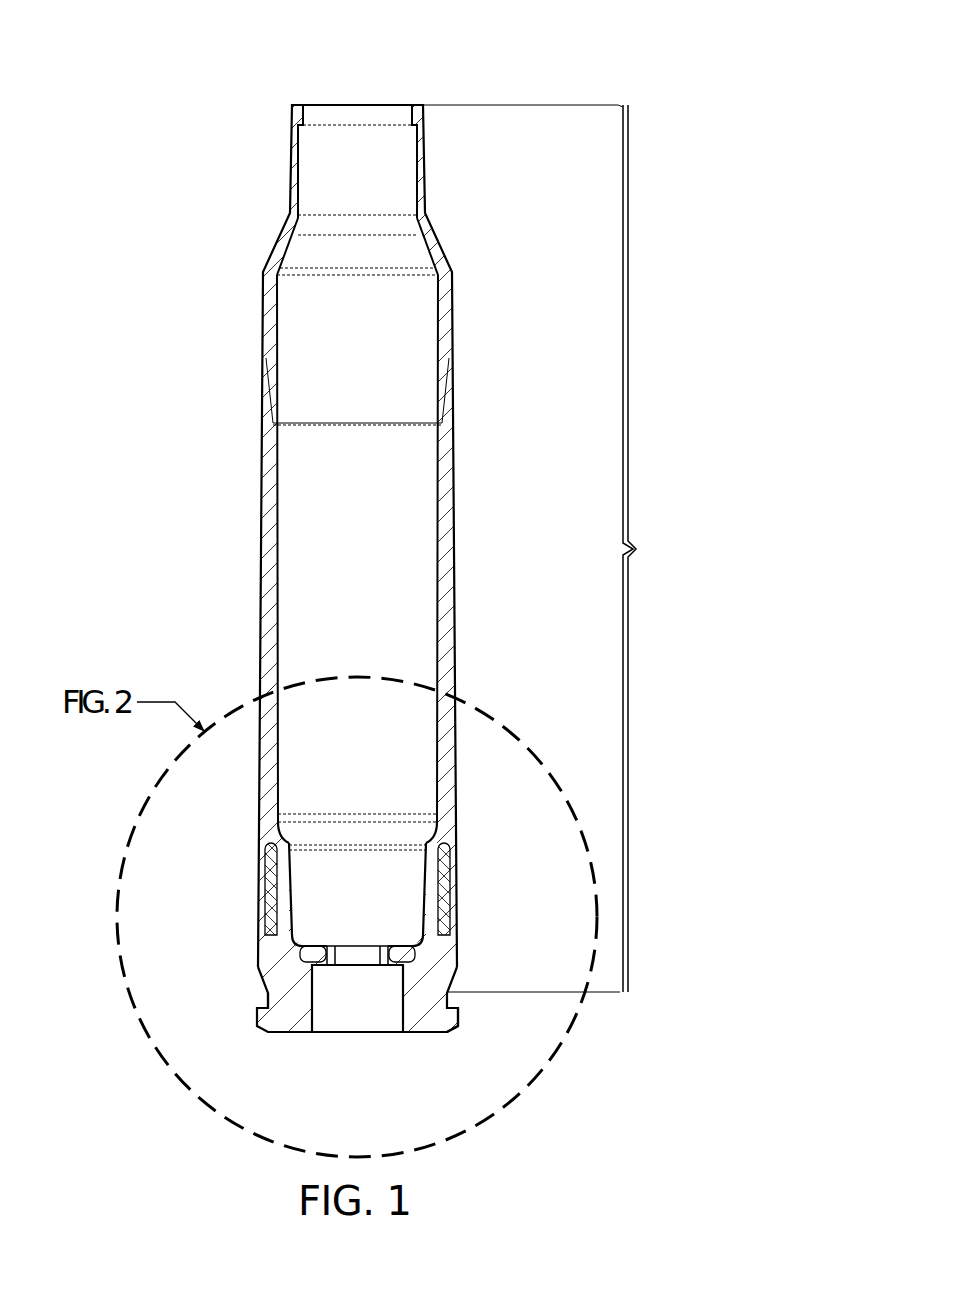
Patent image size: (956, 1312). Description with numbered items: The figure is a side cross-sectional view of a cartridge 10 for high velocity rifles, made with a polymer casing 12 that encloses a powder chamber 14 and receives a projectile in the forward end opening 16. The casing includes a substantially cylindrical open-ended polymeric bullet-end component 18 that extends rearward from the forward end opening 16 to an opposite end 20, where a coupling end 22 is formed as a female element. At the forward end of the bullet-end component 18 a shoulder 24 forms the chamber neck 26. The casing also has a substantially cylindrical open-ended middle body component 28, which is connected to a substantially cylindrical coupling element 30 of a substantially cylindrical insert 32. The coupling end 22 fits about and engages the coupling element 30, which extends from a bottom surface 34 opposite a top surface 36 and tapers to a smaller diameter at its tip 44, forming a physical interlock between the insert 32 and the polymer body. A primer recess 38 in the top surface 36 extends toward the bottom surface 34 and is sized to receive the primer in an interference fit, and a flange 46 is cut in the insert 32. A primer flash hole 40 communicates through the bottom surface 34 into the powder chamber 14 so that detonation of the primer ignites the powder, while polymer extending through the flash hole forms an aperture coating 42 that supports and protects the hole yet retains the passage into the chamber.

The cartridge 10 is at (241, 54).
The polymer casing 12 is at (546, 548).
The powder chamber 14 is at (372, 575).
The forward end opening 16 is at (370, 87).
The bullet-end component 18 is at (260, 310).
The opposite end 20 is at (340, 862).
The coupling end 22 is at (452, 872).
The shoulder 24 is at (278, 250).
The chamber neck 26 is at (292, 153).
The middle body component 28 is at (259, 523).
The coupling element 30 is at (440, 922).
The substantially cylindrical insert 32 is at (255, 1028).
The bottom surface 34 is at (447, 1031).
The top surface 36 is at (278, 1033).
The primer recess 38 is at (312, 1000).
The primer flash hole 40 is at (378, 963).
The aperture coating 42 is at (332, 963).
The tip 44 is at (450, 825).
The flange 46 is at (262, 997).